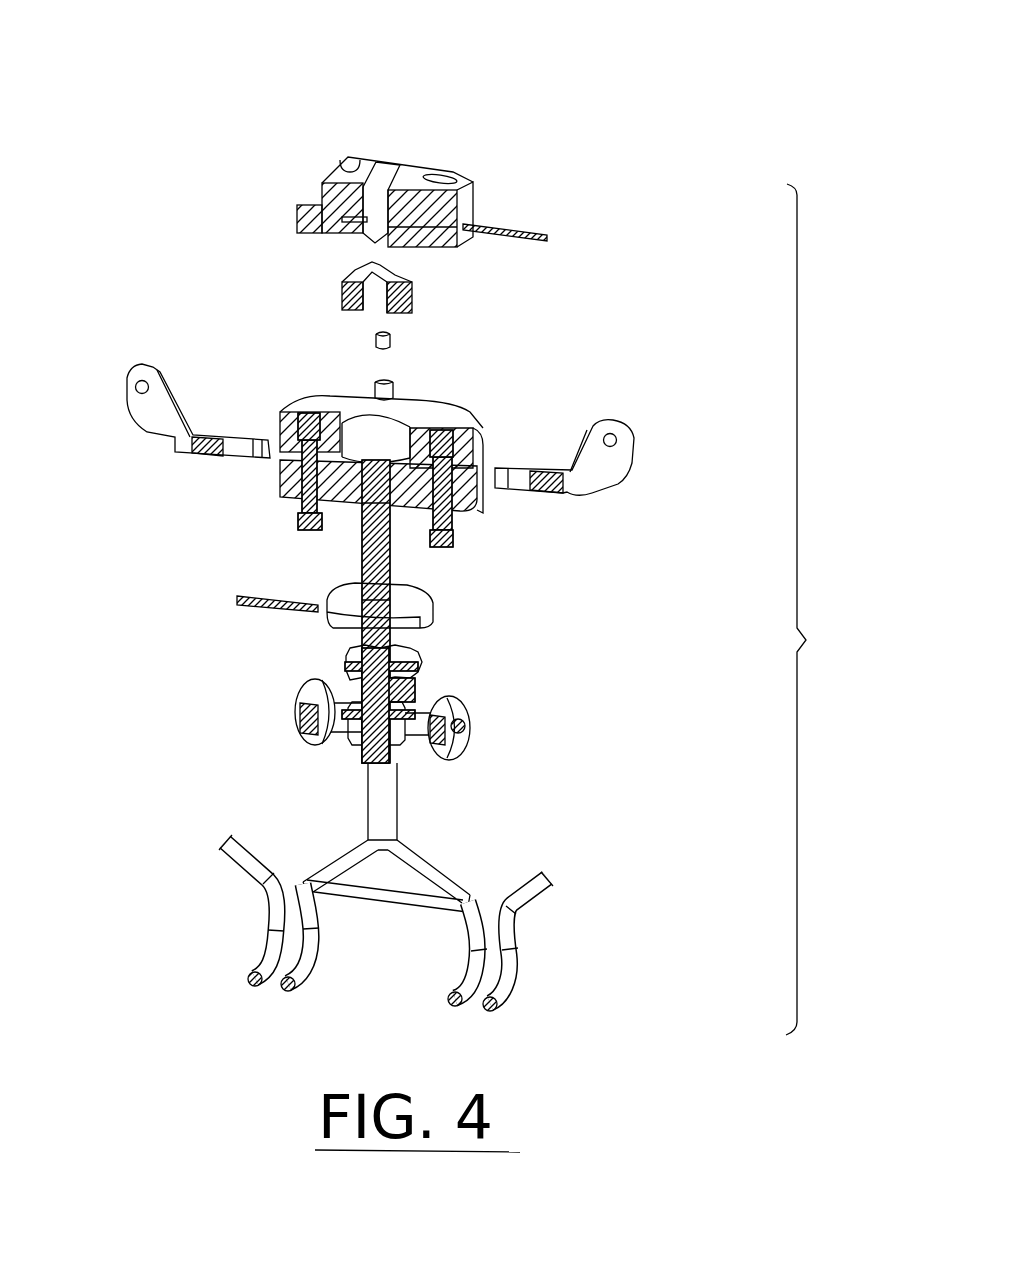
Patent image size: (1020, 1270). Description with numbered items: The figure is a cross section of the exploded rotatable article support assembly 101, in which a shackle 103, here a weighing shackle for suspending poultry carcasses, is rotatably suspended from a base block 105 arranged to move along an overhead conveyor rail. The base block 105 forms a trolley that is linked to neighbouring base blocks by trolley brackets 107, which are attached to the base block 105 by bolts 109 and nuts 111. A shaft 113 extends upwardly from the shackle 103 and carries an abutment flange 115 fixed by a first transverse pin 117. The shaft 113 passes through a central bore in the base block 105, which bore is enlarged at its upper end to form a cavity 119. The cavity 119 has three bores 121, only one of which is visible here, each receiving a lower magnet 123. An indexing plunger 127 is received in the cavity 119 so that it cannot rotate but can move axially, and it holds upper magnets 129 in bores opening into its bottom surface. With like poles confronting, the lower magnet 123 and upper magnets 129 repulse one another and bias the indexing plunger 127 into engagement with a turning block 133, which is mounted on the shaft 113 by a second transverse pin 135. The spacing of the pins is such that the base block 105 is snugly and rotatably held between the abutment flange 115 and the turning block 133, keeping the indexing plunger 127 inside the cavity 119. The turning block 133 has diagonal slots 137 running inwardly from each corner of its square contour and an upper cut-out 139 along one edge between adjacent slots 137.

The rotatable article support assembly 101 is at (838, 634).
The shackle 103 is at (378, 797).
The base block 105 is at (427, 423).
The trolley brackets 107 is at (22, 399).
The bolts 109 is at (136, 488).
The nuts 111 is at (577, 400).
The shaft 113 is at (370, 556).
The abutment flange 115 is at (425, 592).
The first transverse pin 117 is at (270, 608).
The cavity 119 is at (386, 430).
The bores 121 is at (380, 462).
The lower magnet 123 is at (387, 430).
The indexing plunger 127 is at (346, 290).
The upper magnets 129 is at (392, 340).
The turning block 133 is at (405, 175).
The second transverse pin 135 is at (527, 232).
The diagonal slots 137 is at (344, 161).
The upper cut-out 139 is at (320, 207).